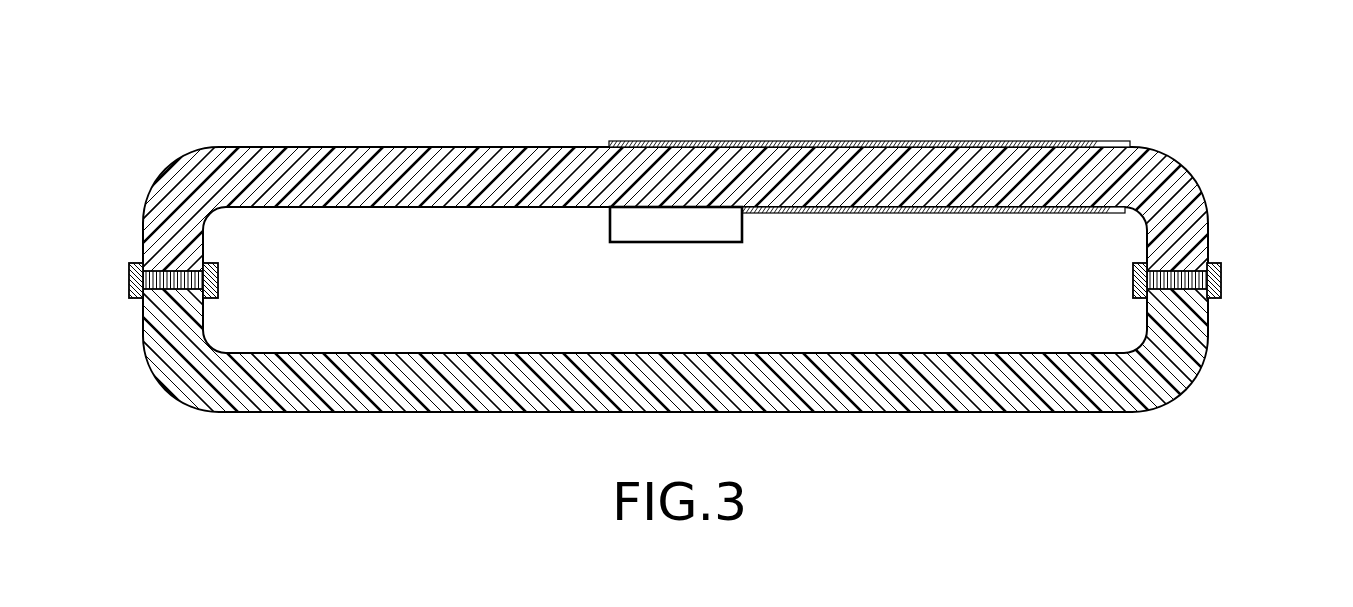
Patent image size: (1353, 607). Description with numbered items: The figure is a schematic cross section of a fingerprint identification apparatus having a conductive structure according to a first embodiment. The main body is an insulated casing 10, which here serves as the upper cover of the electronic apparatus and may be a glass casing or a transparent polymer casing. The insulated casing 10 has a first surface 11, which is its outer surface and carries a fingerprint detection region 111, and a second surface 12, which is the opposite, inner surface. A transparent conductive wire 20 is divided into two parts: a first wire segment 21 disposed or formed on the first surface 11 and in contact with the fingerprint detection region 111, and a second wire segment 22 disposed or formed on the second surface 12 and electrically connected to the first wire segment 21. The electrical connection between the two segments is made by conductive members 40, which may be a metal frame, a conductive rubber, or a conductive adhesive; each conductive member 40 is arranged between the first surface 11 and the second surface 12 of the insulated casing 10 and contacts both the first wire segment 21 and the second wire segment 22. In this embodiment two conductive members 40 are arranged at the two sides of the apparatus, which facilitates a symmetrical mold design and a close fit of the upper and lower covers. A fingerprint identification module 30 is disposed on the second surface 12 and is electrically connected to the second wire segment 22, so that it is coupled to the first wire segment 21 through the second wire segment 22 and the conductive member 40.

The insulated casing 10 is at (670, 250).
The first surface 11 is at (397, 147).
The second surface 12 is at (397, 207).
The fingerprint detection region 111 is at (657, 141).
The conductive wire 20 is at (869, 132).
The first wire segment 21 is at (693, 141).
The second wire segment 22 is at (818, 230).
The fingerprint identification module 30 is at (675, 236).
The conductive member 40 is at (1222, 278).